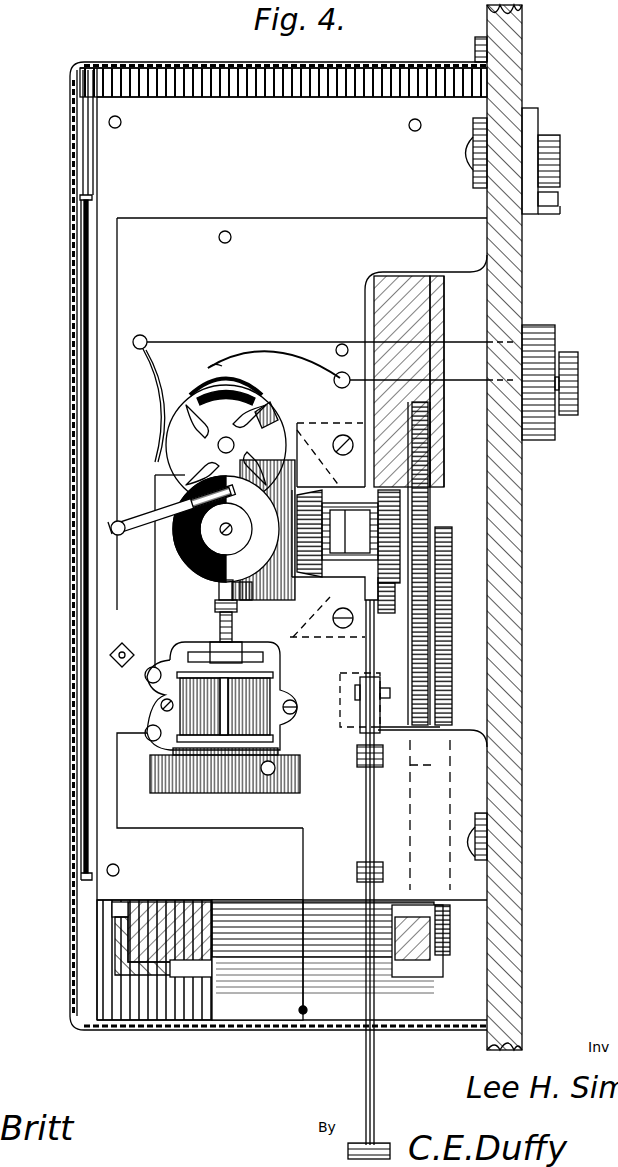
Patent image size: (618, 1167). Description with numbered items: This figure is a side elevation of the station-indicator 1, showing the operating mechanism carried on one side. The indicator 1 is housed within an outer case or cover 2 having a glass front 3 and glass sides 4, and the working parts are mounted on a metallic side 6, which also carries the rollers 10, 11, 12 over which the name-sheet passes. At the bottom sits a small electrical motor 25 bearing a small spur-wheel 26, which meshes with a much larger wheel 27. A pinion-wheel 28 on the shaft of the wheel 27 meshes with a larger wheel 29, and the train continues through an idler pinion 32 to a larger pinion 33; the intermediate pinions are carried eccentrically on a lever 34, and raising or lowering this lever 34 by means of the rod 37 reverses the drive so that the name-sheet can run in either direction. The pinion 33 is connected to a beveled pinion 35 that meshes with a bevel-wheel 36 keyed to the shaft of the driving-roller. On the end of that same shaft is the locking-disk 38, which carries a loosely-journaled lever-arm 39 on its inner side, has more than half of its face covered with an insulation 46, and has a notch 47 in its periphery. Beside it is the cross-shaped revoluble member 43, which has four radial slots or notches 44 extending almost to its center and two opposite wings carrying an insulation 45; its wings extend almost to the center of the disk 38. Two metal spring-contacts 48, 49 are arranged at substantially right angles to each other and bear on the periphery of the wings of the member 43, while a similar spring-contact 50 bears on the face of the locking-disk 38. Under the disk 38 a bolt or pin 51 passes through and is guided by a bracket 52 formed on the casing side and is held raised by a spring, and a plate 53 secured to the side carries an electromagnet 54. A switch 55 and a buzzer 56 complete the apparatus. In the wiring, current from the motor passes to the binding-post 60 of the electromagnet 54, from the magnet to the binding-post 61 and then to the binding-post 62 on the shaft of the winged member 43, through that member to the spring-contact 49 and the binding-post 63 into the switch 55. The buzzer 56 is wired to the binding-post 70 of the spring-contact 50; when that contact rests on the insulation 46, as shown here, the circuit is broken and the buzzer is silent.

The indicator 1 is at (278, 532).
The outer case or cover 2 is at (68, 135).
The glass front 3 is at (82, 280).
The glass sides 4 is at (147, 932).
The side 6 is at (165, 115).
The roller 10 is at (119, 868).
The roller 11 is at (120, 127).
The roller 12 is at (415, 131).
The electrical motor 25 is at (262, 990).
The spur-wheel 26 is at (440, 935).
The wheel 27 is at (440, 700).
The pinion-wheel 28 is at (420, 690).
The wheel 29 is at (420, 612).
The pinion 32 is at (432, 592).
The pinion 33 is at (380, 540).
The lever 34 is at (372, 650).
The beveled pinion 35 is at (350, 505).
The bevel-wheel 36 is at (302, 572).
The rod 37 is at (376, 860).
The locking-disk 38 is at (265, 512).
The lever-arm 39 is at (218, 594).
The revoluble member 43 is at (265, 392).
The radial slots or notches 44 is at (285, 418).
The insulation 45 is at (200, 382).
The insulation 46 is at (190, 565).
The notch 47 is at (262, 588).
The spring-contact 48 is at (160, 402).
The spring-contact 49 is at (282, 350).
The spring-contact 50 is at (142, 538).
The bolt or pin 51 is at (214, 606).
The bracket 52 is at (238, 609).
The plate 53 is at (277, 685).
The electromagnet 54 is at (245, 730).
The switch 55 is at (550, 340).
The buzzer 56 is at (545, 160).
The binding-post 60 is at (145, 733).
The binding-post 61 is at (145, 676).
The binding-post 62 is at (224, 437).
The binding-post 63 is at (336, 376).
The binding-post 70 is at (111, 529).